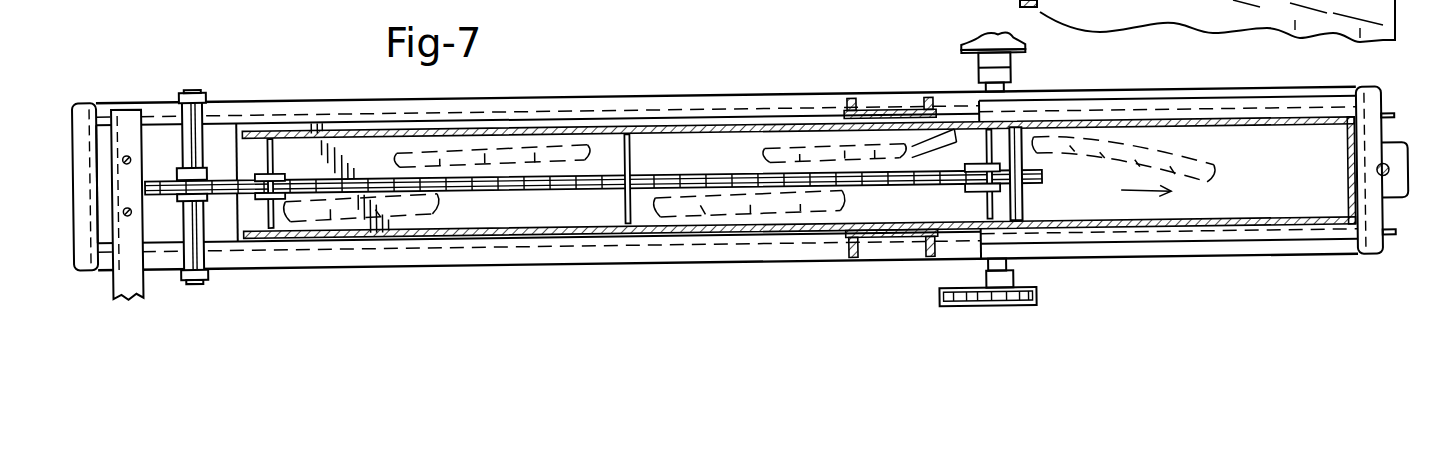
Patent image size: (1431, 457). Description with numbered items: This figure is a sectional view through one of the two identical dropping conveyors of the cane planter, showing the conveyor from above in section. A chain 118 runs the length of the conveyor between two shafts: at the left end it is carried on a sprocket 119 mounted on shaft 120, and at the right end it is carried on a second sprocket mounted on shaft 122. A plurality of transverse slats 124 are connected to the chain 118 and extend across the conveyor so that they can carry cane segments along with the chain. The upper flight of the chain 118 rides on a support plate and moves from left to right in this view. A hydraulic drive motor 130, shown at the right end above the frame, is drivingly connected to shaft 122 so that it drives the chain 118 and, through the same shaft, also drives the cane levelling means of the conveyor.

The chain 118 is at (489, 191).
The sprocket 119 is at (181, 203).
The shaft 120 is at (180, 145).
The shaft 122 is at (1005, 262).
The transverse slat 124 is at (632, 149).
The hydraulic drive motor 130 is at (995, 34).